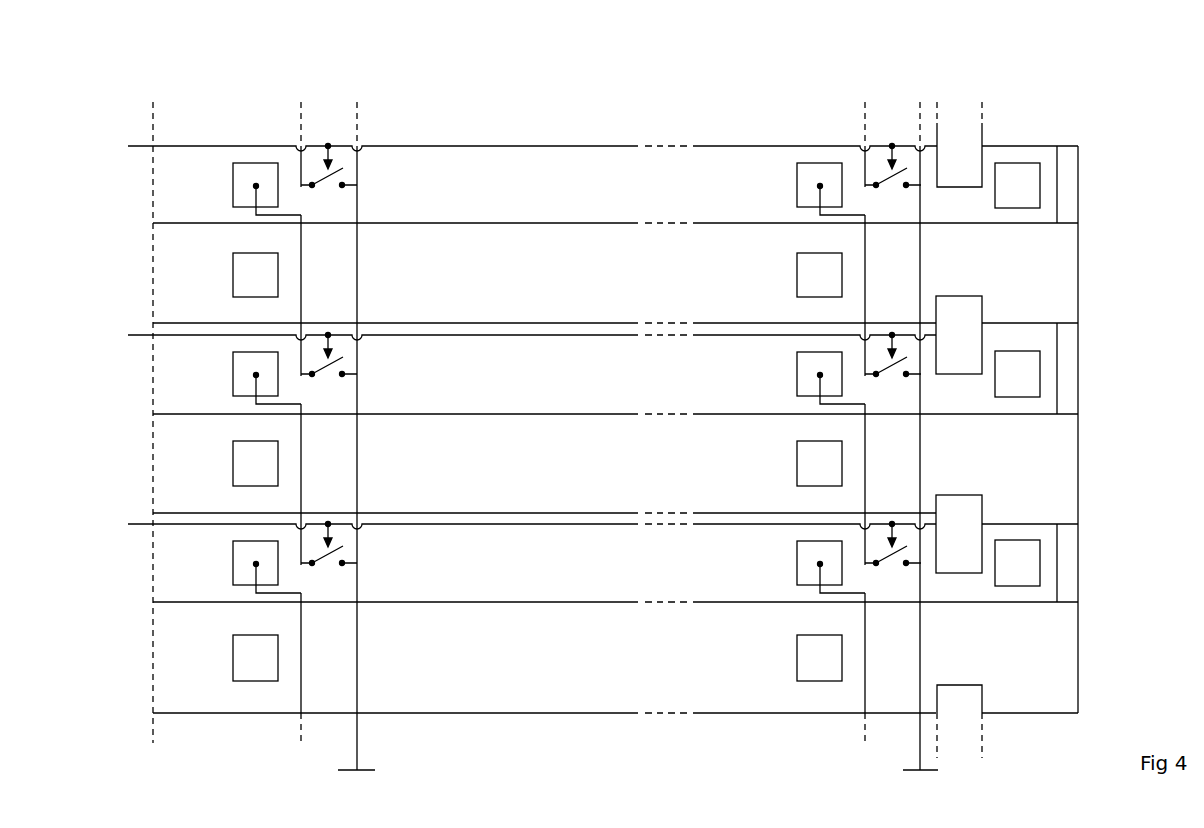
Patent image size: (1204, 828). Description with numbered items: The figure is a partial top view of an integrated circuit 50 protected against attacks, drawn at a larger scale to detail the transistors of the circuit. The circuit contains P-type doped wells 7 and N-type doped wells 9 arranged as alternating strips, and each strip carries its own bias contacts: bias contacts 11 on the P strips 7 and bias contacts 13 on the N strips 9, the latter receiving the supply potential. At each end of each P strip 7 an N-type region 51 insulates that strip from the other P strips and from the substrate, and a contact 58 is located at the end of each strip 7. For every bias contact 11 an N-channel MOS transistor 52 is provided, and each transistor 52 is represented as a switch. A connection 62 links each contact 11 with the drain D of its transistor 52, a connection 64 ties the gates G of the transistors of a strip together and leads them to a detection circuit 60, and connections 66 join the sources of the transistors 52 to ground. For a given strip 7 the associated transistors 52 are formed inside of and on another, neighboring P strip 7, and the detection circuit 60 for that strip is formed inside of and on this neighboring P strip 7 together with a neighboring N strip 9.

The integrated circuit 50 is at (139, 93).
The bias contact 11 is at (245, 187).
The bias contact 13 is at (245, 282).
The N-channel MOS transistor 52 is at (330, 178).
The connection 62 is at (303, 272).
The connection 64 is at (560, 148).
The connection 66 is at (360, 457).
The contact 58 is at (1020, 177).
The N-type region 51 is at (1068, 173).
The P-type doped well 7 is at (1043, 215).
The N-type doped well 9 is at (1063, 272).
The detection circuit 60 is at (967, 302).
The gate G is at (333, 155).
The drain D is at (309, 188).